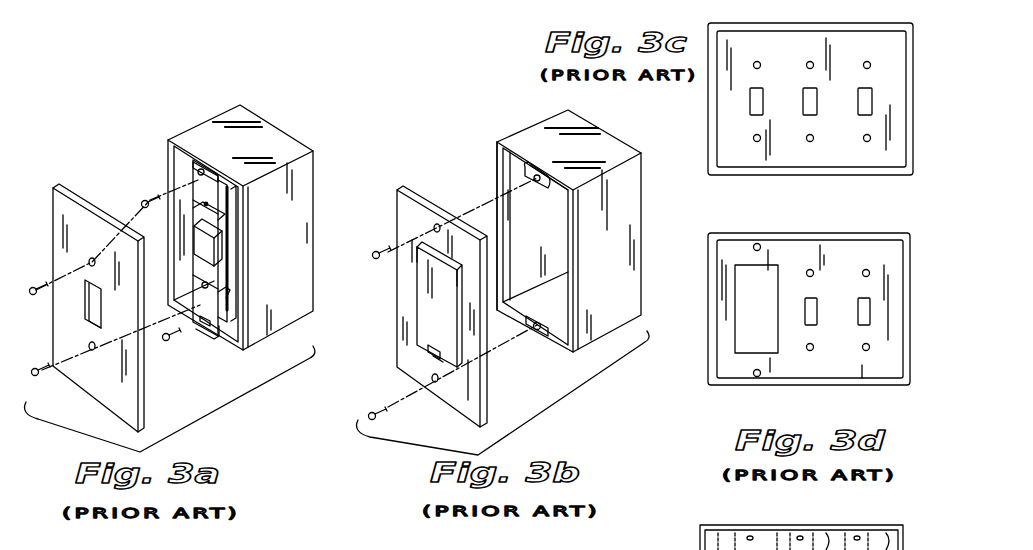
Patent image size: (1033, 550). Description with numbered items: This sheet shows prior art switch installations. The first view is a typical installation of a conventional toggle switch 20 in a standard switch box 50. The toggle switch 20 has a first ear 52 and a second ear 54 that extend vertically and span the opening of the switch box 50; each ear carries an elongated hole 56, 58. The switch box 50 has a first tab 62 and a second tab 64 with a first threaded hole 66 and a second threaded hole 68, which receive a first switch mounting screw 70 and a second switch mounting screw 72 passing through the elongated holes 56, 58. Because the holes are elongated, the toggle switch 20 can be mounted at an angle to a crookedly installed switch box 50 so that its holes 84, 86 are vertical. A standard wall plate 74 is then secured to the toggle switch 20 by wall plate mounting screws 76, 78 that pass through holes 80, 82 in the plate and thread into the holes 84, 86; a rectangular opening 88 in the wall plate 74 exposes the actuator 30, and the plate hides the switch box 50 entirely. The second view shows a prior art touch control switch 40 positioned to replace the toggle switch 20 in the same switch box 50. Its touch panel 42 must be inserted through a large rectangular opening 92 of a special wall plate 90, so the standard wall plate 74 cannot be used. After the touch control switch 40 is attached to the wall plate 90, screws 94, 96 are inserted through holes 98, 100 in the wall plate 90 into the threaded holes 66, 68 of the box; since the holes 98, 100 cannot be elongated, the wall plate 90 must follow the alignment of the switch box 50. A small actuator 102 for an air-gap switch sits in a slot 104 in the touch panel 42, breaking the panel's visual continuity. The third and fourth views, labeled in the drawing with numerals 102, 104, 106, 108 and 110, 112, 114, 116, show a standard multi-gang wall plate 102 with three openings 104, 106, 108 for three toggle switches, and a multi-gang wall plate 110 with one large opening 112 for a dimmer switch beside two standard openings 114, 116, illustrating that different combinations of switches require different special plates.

In FIG. 3A, the toggle switch 20 is at (236, 260).
In FIG. 3A, the actuator 30 is at (194, 245).
In FIG. 3B, the touch control switch 40 is at (490, 338).
In FIG. 3B, the touch panel 42 is at (430, 316).
In FIG. 3A, the switch box 50 is at (270, 125).
In FIG. 3B, the switch box 50 is at (540, 135).
In FIG. 3A, the first ear 52 is at (196, 170).
In FIG. 3A, the second ear 54 is at (218, 336).
In FIG. 3A, the first elongated hole 56 is at (205, 163).
In FIG. 3A, the second elongated hole 58 is at (205, 330).
In FIG. 3B, the first tab 62 is at (537, 184).
In FIG. 3B, the second tab 64 is at (546, 320).
In FIG. 3B, the first threaded hole 66 is at (528, 172).
In FIG. 3B, the second threaded hole 68 is at (539, 332).
In FIG. 3A, the first switch mounting screw 70 is at (143, 201).
In FIG. 3A, the second switch mounting screw 72 is at (168, 345).
In FIG. 3A, the wall plate 74 is at (58, 188).
In FIG. 3A, the wall plate mounting screw 76 is at (33, 287).
In FIG. 3A, the wall plate mounting screw 78 is at (38, 370).
In FIG. 3A, the hole 80 is at (88, 260).
In FIG. 3A, the hole 82 is at (92, 352).
In FIG. 3A, the hole 84 is at (208, 206).
In FIG. 3A, the hole 86 is at (226, 296).
In FIG. 3A, the rectangular opening 88 is at (86, 304).
In FIG. 3B, the wall plate 90 is at (410, 195).
In FIG. 3B, the rectangular opening 92 is at (432, 298).
In FIG. 3B, the screw 94 is at (375, 252).
In FIG. 3B, the screw 96 is at (372, 414).
In FIG. 3B, the hole 98 is at (440, 226).
In FIG. 3B, the hole 100 is at (436, 384).
In FIG. 3B, the actuator 102 is at (428, 350).
In FIG. 3C, the actuator 102 is at (832, 160).
In FIG. 3D, the actuator 102 is at (742, 526).
In FIG. 3B, the slot 104 is at (436, 360).
In FIG. 3C, the slot 104 is at (752, 103).
In FIG. 3C, the toggle opening 106 is at (815, 105).
In FIG. 3D, the toggle opening 106 is at (828, 533).
In FIG. 3C, the toggle opening 108 is at (870, 98).
In FIG. 3D, the toggle opening 108 is at (889, 533).
In FIG. 3C, the wall plate 110 is at (730, 248).
In FIG. 3C, the rectangular opening 112 is at (738, 332).
In FIG. 3C, the toggle opening 114 is at (810, 310).
In FIG. 3C, the toggle opening 116 is at (860, 318).